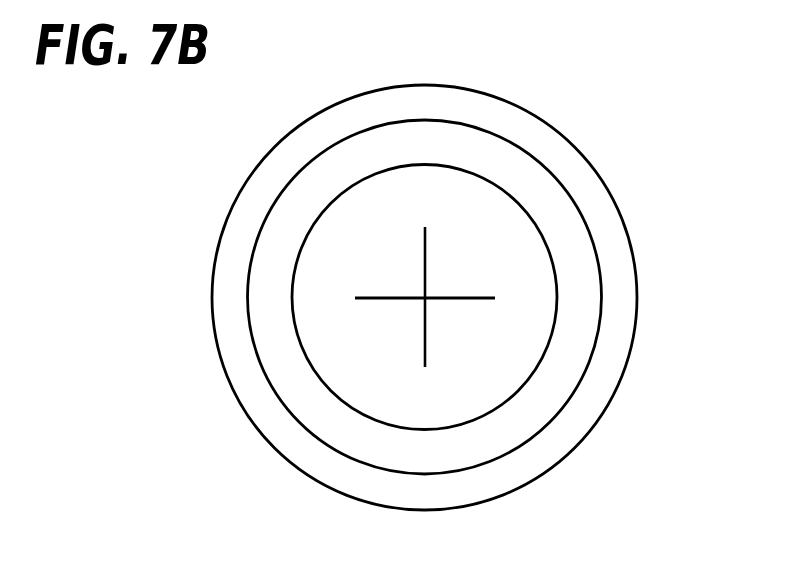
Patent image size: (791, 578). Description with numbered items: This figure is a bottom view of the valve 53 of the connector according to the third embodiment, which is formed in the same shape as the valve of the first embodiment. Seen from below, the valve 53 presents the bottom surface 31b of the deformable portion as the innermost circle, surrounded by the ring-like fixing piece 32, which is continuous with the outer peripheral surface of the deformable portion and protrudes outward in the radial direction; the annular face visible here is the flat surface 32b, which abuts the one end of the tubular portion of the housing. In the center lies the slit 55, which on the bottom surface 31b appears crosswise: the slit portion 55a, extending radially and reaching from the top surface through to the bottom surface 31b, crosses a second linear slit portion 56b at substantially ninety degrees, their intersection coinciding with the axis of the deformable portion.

The valve 53 is at (633, 90).
The fixing piece 32 is at (240, 408).
The flat surface 32b is at (610, 383).
The bottom surface 31b is at (488, 217).
The slit 55 is at (408, 245).
The slit portion 55a is at (423, 343).
The horizontal line of cross mark 56b is at (380, 297).